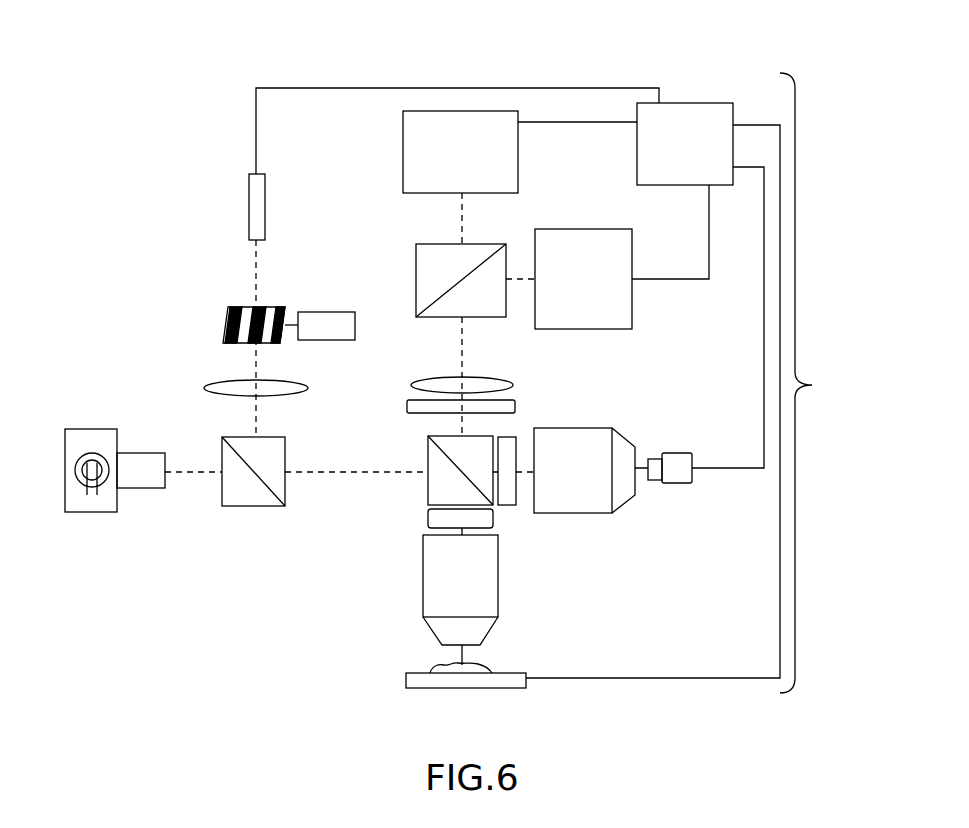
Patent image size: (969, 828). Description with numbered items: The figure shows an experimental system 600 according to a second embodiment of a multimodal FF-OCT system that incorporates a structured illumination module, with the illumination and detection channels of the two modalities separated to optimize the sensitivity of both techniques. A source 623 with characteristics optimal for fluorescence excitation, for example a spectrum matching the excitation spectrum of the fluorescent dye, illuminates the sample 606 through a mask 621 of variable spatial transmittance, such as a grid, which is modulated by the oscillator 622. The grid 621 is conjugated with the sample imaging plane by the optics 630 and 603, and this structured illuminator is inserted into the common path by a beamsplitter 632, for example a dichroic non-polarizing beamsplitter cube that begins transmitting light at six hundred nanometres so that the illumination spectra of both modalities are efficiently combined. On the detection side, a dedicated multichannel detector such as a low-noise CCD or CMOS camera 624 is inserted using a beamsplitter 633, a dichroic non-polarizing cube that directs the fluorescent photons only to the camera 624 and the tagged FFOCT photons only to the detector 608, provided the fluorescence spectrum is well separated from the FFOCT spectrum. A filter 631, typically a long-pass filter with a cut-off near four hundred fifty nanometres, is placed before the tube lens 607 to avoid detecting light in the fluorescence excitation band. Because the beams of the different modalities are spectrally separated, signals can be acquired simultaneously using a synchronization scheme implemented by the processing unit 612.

The system 600 is at (821, 383).
The optics 603 is at (436, 593).
The sample 606 is at (432, 665).
The tube lens 607 is at (482, 380).
The detector 608 is at (408, 158).
The processing unit 612 is at (690, 113).
The mask 621 is at (226, 320).
The oscillator 622 is at (325, 312).
The source 623 is at (249, 207).
The camera 624 is at (585, 240).
The optics 630 is at (207, 388).
The filter 631 is at (407, 407).
The beamsplitter 632 is at (258, 500).
The beamsplitter 633 is at (420, 273).